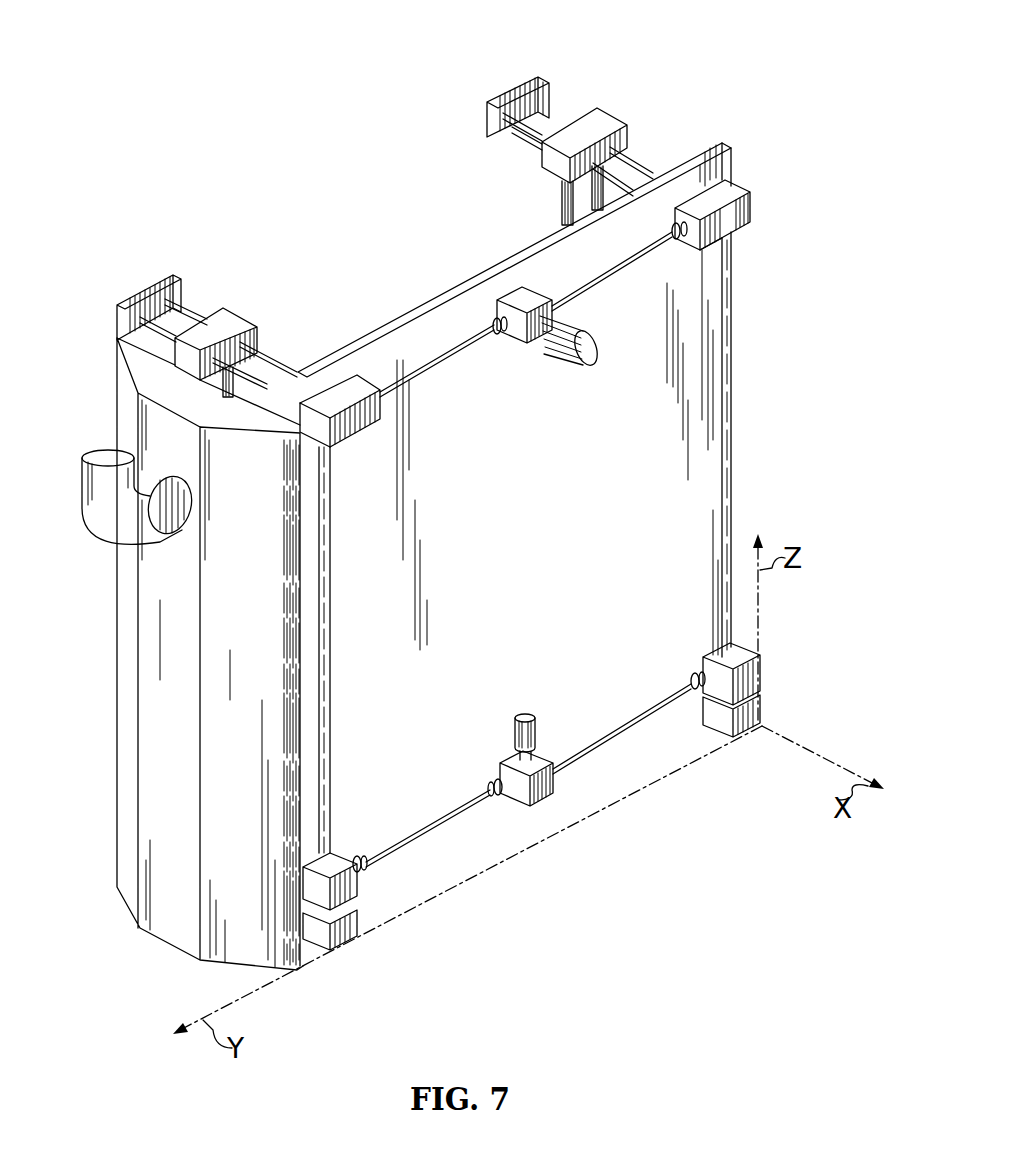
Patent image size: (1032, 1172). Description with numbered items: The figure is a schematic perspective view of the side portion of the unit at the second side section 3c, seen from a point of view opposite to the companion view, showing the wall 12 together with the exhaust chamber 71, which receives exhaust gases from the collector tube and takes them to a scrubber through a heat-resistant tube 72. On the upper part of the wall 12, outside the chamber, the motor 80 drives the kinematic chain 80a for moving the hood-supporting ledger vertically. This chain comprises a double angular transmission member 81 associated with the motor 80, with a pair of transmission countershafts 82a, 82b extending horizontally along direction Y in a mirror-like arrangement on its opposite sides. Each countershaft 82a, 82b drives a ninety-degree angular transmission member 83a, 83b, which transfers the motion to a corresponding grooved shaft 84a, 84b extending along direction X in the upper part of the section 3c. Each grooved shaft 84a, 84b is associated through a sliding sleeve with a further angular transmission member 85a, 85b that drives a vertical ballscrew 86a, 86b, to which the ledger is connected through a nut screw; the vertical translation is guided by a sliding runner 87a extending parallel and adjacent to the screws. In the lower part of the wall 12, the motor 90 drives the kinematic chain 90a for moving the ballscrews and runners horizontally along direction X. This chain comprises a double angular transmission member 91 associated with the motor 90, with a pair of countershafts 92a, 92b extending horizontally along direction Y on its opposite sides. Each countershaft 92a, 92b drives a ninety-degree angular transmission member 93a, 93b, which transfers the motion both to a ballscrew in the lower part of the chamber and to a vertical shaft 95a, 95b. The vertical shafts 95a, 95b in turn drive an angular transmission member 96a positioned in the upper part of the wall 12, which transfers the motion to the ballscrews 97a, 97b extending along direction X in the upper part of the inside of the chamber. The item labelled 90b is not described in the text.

The wall 12 is at (545, 551).
The exhaust chamber 71 is at (152, 678).
The heat-resistant tube 72 is at (100, 532).
The motor 80 is at (565, 352).
The kinematic chain 80a is at (610, 302).
The double angular transmission member 81 is at (515, 327).
The transmission countershaft 82a is at (680, 268).
The transmission countershaft 82b is at (468, 330).
The 90° angular transmission member 83a is at (722, 243).
The 90° angular transmission member 83b is at (370, 405).
The grooved shaft 84a is at (533, 135).
The grooved shaft 84b is at (273, 348).
The 90° angular transmission member 85a is at (606, 120).
The 90° angular transmission member 85b is at (228, 318).
The vertical ballscrew 86a is at (565, 185).
The vertical ballscrew 86b is at (245, 372).
The vertical sliding runner 87a is at (600, 205).
The motor 90 is at (538, 728).
The kinematic chain 90a is at (500, 830).
The support block 90b is at (345, 422).
The double angular transmission member 91 is at (553, 797).
The countershaft 92a is at (627, 730).
The countershaft 92b is at (410, 853).
The 90° angular transmission member 93a is at (750, 738).
The 90° angular transmission member 93b is at (360, 880).
The vertical shaft 95a is at (735, 470).
The vertical shaft 95b is at (333, 690).
The 90° angular transmission member 96a is at (750, 223).
The ballscrew 97a is at (552, 105).
The ballscrew 97b is at (280, 395).
The second side section 3c is at (356, 207).